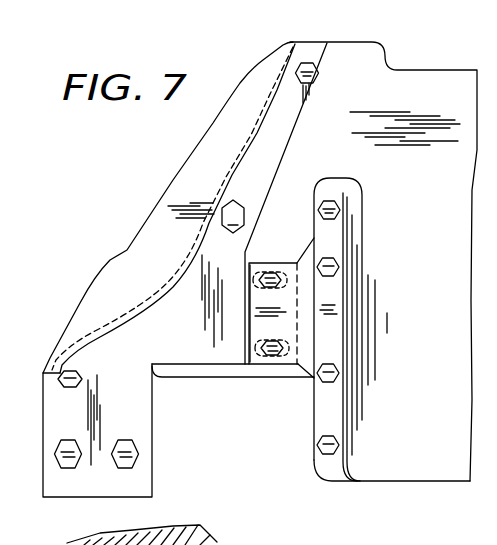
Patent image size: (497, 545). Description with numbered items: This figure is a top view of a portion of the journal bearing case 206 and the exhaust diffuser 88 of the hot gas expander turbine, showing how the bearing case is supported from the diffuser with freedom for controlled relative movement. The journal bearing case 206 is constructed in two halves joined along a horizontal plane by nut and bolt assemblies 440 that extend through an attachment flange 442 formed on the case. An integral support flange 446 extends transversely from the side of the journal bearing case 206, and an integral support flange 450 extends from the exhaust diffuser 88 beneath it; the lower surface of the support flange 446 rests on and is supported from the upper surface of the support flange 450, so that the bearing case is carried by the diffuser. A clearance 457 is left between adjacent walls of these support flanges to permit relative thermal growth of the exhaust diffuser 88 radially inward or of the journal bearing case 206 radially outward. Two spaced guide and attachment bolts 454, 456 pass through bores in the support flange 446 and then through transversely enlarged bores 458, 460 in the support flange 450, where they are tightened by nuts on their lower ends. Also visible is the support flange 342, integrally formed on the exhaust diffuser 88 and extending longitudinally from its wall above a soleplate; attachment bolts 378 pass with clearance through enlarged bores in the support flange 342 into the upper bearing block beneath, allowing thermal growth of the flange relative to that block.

The exhaust diffuser 88 is at (177, 283).
The journal bearing case 206 is at (428, 228).
The support flange 342 is at (112, 497).
The attachment bolts 378 is at (138, 455).
The nut and bolt assemblies 440 is at (334, 196).
The attachment flange 442 is at (320, 197).
The support flange 446 is at (255, 378).
The support flange 450 is at (297, 303).
The guide and attachment bolt 454 is at (278, 356).
The guide and attachment bolt 456 is at (277, 267).
The clearance 457 is at (243, 285).
The transversely enlarged bore 458 is at (249, 340).
The transversely enlarged bore 460 is at (260, 263).